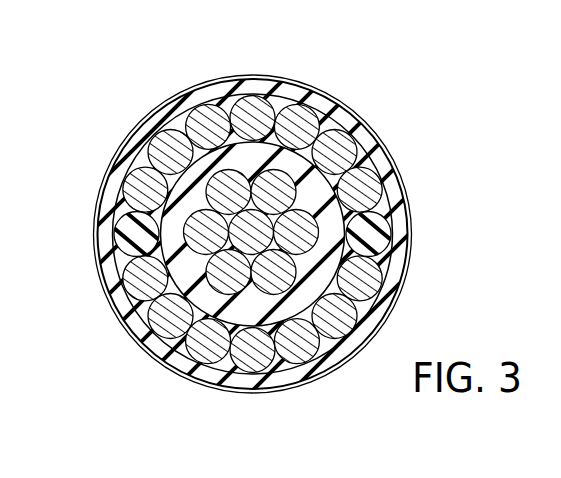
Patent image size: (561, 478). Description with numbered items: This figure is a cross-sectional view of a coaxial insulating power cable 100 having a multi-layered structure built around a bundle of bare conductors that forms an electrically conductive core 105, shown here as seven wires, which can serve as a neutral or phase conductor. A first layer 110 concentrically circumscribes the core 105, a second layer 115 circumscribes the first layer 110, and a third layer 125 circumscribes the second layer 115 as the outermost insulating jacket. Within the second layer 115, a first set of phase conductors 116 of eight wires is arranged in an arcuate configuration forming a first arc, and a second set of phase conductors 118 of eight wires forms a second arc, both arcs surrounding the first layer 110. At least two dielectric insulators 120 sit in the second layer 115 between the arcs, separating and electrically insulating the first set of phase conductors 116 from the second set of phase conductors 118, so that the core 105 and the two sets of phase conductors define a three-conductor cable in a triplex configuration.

The coaxial insulating power cable 100 is at (108, 70).
The electrically conductive core 105 is at (356, 152).
The first layer 110 is at (248, 156).
The second layer 115 is at (382, 258).
The first set of phase conductors 116 is at (198, 108).
The second set of phase conductors 118 is at (206, 354).
The dielectric insulators 120 is at (382, 222).
The third layer 125 is at (297, 88).